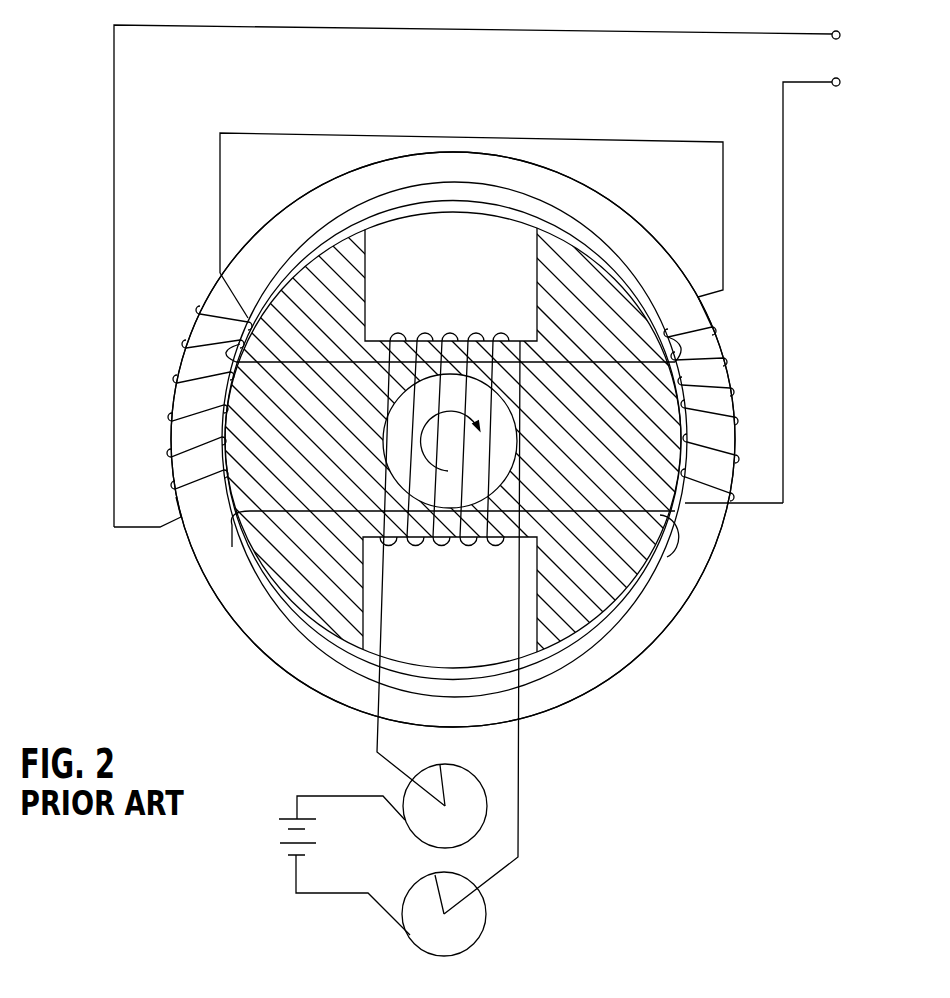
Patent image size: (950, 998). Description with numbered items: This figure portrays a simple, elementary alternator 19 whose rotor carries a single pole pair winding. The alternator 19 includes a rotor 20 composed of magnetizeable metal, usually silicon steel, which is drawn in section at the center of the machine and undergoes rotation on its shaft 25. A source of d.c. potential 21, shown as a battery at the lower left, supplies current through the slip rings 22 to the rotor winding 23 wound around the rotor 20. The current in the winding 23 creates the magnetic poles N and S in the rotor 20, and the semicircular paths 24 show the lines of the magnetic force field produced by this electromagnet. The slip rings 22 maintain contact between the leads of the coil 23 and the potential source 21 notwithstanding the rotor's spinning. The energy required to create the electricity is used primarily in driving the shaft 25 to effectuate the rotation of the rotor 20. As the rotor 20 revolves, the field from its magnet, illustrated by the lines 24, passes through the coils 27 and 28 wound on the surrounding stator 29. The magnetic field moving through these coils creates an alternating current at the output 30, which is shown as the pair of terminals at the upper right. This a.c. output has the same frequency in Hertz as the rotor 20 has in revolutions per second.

The alternator 19 is at (218, 632).
The rotor 20 is at (603, 290).
The source of d.c. potential 21 is at (290, 812).
The slip rings 22 is at (480, 817).
The rotor winding 23 is at (440, 338).
The semicircular paths 24 is at (570, 210).
The shaft 25 is at (472, 493).
The coil 27 is at (731, 388).
The coil 28 is at (172, 408).
The stator 29 is at (202, 517).
The output 30 is at (836, 40).